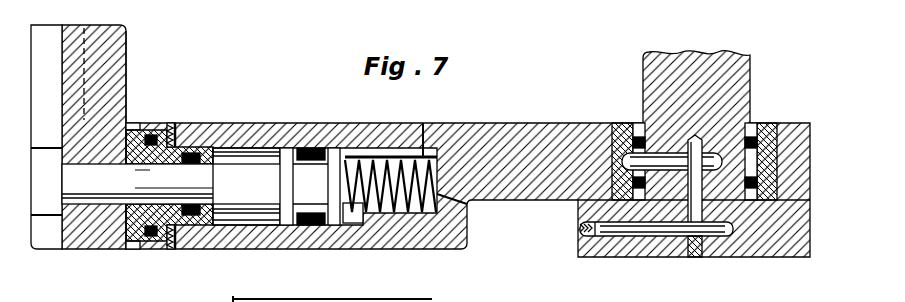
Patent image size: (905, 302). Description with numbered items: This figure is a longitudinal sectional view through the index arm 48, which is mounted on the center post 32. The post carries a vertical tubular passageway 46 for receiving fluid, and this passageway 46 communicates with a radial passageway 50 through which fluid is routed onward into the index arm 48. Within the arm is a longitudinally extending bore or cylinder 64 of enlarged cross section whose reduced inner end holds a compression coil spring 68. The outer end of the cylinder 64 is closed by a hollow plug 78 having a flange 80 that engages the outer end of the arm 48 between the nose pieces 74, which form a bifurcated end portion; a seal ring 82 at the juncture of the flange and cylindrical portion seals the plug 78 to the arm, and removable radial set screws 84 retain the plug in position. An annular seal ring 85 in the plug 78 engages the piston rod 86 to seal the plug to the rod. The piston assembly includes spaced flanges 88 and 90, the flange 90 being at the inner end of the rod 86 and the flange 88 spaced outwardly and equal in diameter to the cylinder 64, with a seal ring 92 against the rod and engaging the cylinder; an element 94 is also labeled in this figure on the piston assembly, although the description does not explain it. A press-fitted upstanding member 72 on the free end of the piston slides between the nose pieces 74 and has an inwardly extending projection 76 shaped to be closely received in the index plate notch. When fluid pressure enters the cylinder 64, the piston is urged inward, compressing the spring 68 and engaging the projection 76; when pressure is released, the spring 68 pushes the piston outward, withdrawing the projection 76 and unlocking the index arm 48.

The center post 32 is at (730, 100).
The longitudinal passageway 46 is at (690, 225).
The index arm 48 is at (520, 138).
The radial passageway 50 is at (655, 160).
The bore or cylinder 64 is at (237, 222).
The compression coil spring 68 is at (428, 215).
The upstanding member 72 is at (84, 28).
The nose pieces 74 is at (44, 44).
The inwardly extending projection 76 is at (115, 48).
The plug 78 is at (178, 147).
The flange 80 is at (135, 129).
The seal ring 82 is at (152, 136).
The radial set screws 84 is at (180, 240).
The annular seal ring 85 is at (200, 148).
The piston rod 86 is at (152, 190).
The flange 88 is at (285, 148).
The flange 90 is at (337, 150).
The seal ring 92 is at (303, 149).
The sleeve 94 is at (290, 214).